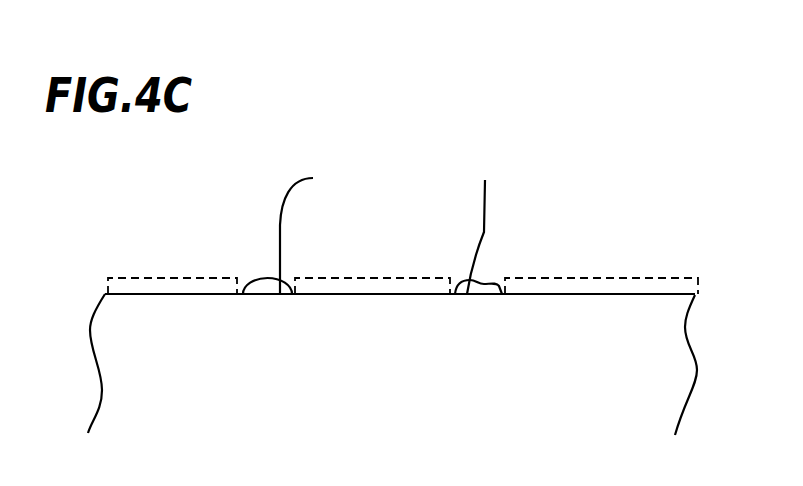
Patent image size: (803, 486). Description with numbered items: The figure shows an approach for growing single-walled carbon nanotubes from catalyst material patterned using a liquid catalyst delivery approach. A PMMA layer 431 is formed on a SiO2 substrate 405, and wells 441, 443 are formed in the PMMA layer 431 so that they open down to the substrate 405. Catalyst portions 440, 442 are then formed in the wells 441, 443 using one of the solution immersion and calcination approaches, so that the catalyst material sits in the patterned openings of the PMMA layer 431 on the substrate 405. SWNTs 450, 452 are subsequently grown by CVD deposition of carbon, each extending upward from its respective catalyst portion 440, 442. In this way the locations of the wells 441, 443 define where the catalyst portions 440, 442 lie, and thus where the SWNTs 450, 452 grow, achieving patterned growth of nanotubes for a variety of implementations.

The SiO2 substrate 405 is at (423, 441).
The PMMA layer 431 is at (669, 286).
The catalyst portion 440 is at (270, 296).
The well 441 is at (240, 300).
The catalyst portion 442 is at (483, 296).
The well 443 is at (453, 298).
The SWNT 450 is at (280, 221).
The SWNT 452 is at (485, 220).